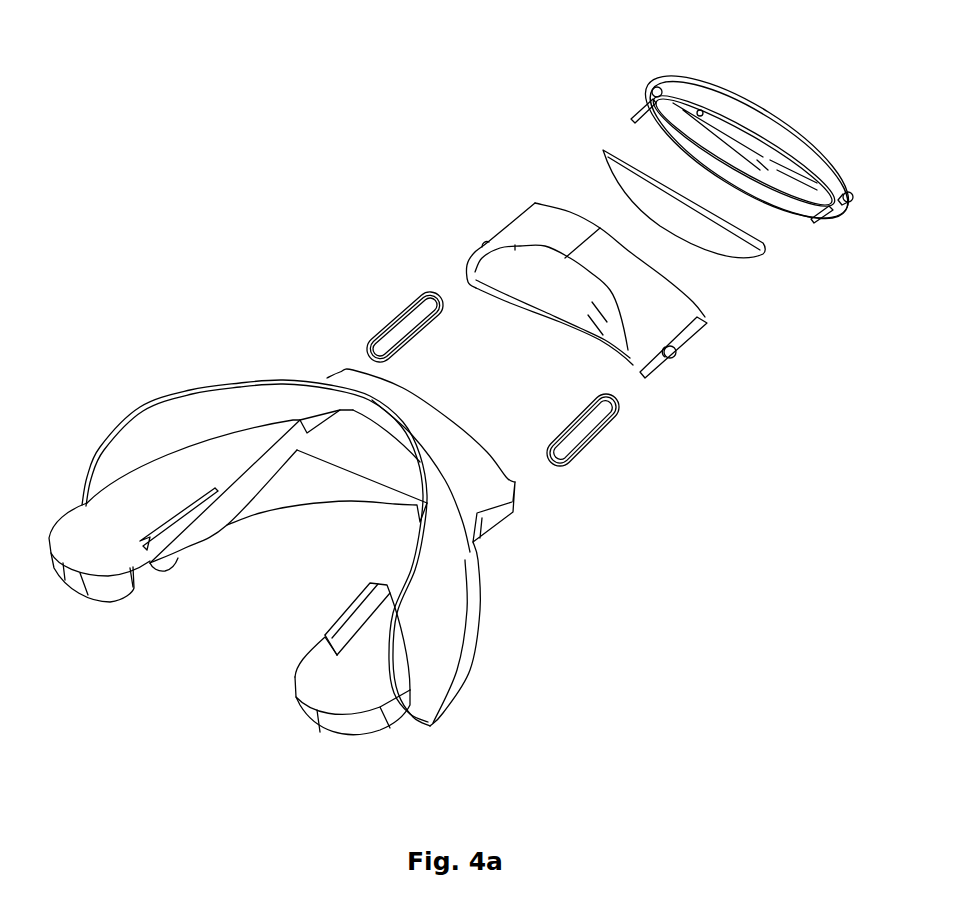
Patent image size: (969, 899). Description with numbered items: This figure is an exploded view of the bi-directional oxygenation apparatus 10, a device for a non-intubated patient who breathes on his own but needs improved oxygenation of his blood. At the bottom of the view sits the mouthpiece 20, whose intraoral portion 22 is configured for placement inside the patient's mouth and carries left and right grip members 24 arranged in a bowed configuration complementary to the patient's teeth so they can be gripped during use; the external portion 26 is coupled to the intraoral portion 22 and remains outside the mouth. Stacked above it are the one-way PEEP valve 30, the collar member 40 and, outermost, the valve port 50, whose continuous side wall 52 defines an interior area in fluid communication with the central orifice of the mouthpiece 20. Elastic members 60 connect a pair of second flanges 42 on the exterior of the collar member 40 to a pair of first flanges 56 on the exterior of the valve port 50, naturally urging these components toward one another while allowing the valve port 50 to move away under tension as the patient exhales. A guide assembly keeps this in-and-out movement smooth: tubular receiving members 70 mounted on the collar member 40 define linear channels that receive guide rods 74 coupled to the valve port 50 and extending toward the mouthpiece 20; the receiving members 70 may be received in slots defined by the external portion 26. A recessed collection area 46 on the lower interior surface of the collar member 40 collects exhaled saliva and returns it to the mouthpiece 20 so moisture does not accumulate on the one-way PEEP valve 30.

The bi-directional oxygenation apparatus 10 is at (318, 132).
The mouthpiece 20 is at (159, 397).
The intraoral portion 22 is at (287, 538).
The grip members 24 is at (77, 550).
The external portion 26 is at (485, 471).
The one-way PEEP valve 30 is at (623, 173).
The collar member 40 is at (660, 287).
The second flange 42 is at (485, 241).
The collection area 46 is at (600, 322).
The valve port 50 is at (822, 121).
The continuous side wall 52 is at (705, 88).
The first flange 56 is at (658, 84).
The elastic member 60 is at (393, 322).
The receiving member 70 is at (699, 330).
The guide rod 74 is at (641, 107).